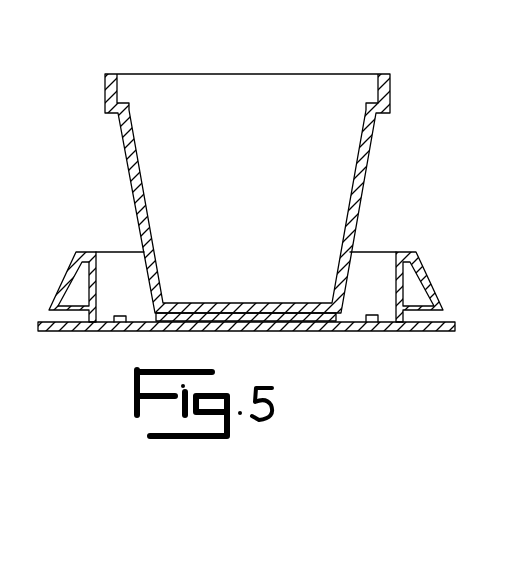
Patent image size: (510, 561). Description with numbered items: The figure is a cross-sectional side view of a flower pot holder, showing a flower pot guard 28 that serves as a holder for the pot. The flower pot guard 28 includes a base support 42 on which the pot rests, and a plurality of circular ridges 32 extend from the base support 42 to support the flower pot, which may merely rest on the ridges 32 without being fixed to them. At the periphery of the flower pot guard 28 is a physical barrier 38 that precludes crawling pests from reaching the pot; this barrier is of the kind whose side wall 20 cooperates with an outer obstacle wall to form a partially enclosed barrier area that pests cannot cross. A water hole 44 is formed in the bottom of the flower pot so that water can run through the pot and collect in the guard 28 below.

The side wall 20 is at (355, 215).
The flower pot guard 28 is at (407, 252).
The ridges 32 is at (372, 313).
The physical barrier 38 is at (45, 289).
The base support 42 is at (163, 332).
The water hole 44 is at (237, 303).